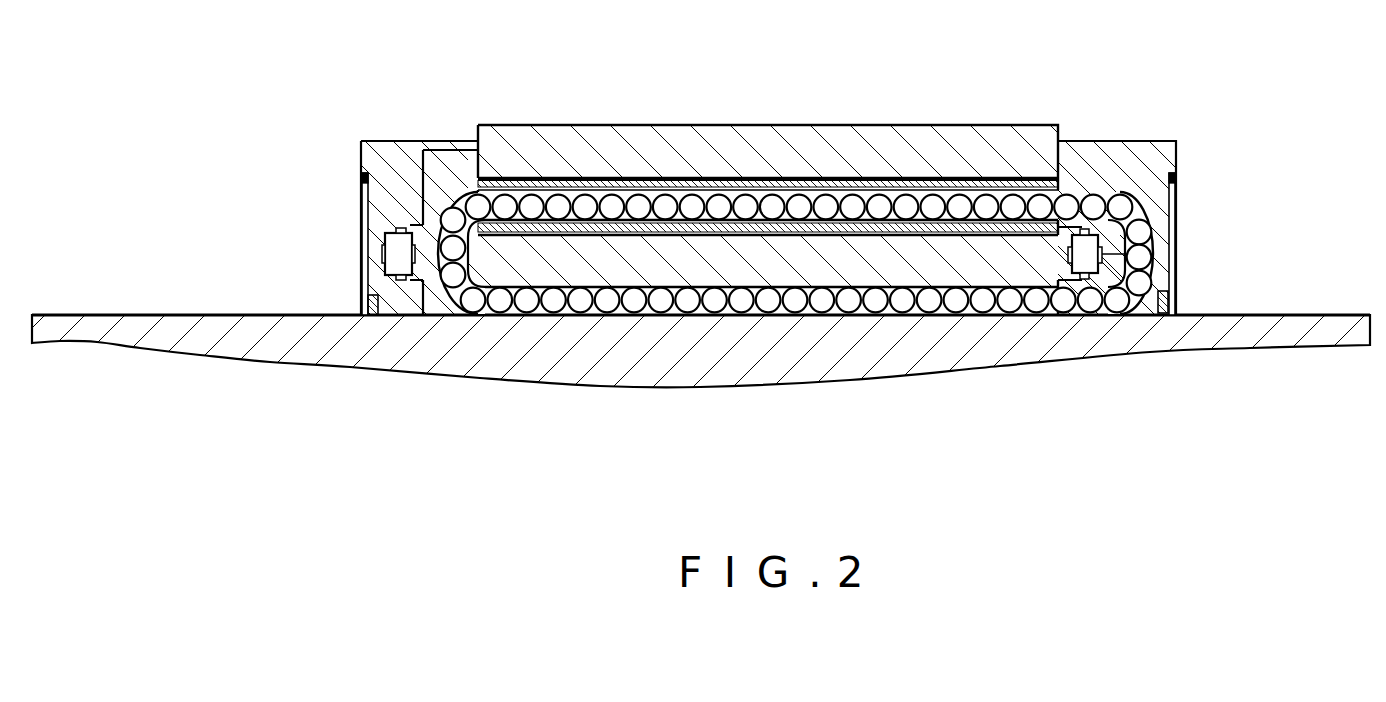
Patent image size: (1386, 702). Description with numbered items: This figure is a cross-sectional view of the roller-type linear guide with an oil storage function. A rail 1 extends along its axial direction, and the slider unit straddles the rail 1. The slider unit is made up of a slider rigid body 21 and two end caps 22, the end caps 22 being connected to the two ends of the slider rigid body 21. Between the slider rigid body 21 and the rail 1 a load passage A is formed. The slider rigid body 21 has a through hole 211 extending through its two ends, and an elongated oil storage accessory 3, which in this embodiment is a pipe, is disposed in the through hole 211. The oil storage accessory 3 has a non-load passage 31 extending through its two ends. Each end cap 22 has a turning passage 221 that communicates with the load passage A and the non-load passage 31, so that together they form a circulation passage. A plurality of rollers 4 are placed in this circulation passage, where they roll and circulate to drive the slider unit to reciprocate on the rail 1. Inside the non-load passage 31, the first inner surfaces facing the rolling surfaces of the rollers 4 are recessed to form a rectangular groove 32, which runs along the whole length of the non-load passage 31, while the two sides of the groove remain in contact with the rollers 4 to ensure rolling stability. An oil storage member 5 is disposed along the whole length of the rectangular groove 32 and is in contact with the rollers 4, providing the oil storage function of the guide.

The rail 1 is at (1293, 327).
The slider rigid body 21 is at (780, 150).
The through hole 211 is at (957, 178).
The end cap 22 is at (398, 165).
The turning passage 221 is at (435, 235).
The oil storage accessory 3 is at (503, 178).
The non-load passage 31 is at (627, 183).
The rectangular groove 32 is at (703, 190).
The rollers 4 is at (880, 205).
The oil storage member 5 is at (840, 187).
The load passage A is at (755, 314).